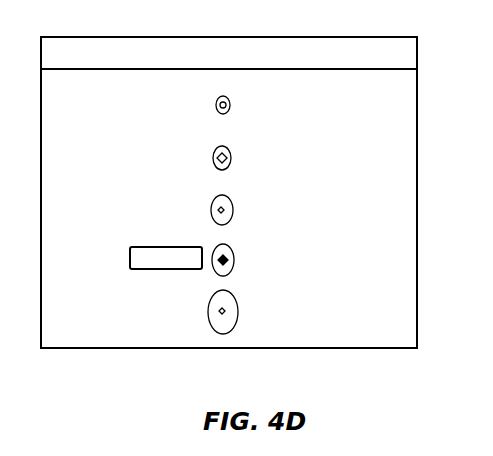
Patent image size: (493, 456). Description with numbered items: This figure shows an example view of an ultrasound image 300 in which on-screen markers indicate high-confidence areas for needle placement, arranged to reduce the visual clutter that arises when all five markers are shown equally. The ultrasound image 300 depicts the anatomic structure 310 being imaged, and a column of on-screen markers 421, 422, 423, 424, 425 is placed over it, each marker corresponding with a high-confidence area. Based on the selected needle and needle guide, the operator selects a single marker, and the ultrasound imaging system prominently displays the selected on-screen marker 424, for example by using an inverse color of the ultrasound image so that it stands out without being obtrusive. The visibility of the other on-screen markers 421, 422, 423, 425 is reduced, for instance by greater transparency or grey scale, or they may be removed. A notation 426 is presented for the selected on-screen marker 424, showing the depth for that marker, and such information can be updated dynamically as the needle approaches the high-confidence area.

The ultrasound image 300 is at (357, 47).
The anatomic structure 310 is at (390, 80).
The on-screen marker 421 is at (231, 105).
The on-screen marker 422 is at (232, 157).
The on-screen marker 423 is at (233, 207).
The selected on-screen marker 424 is at (234, 258).
The on-screen marker 425 is at (226, 311).
The notation 426 is at (157, 269).